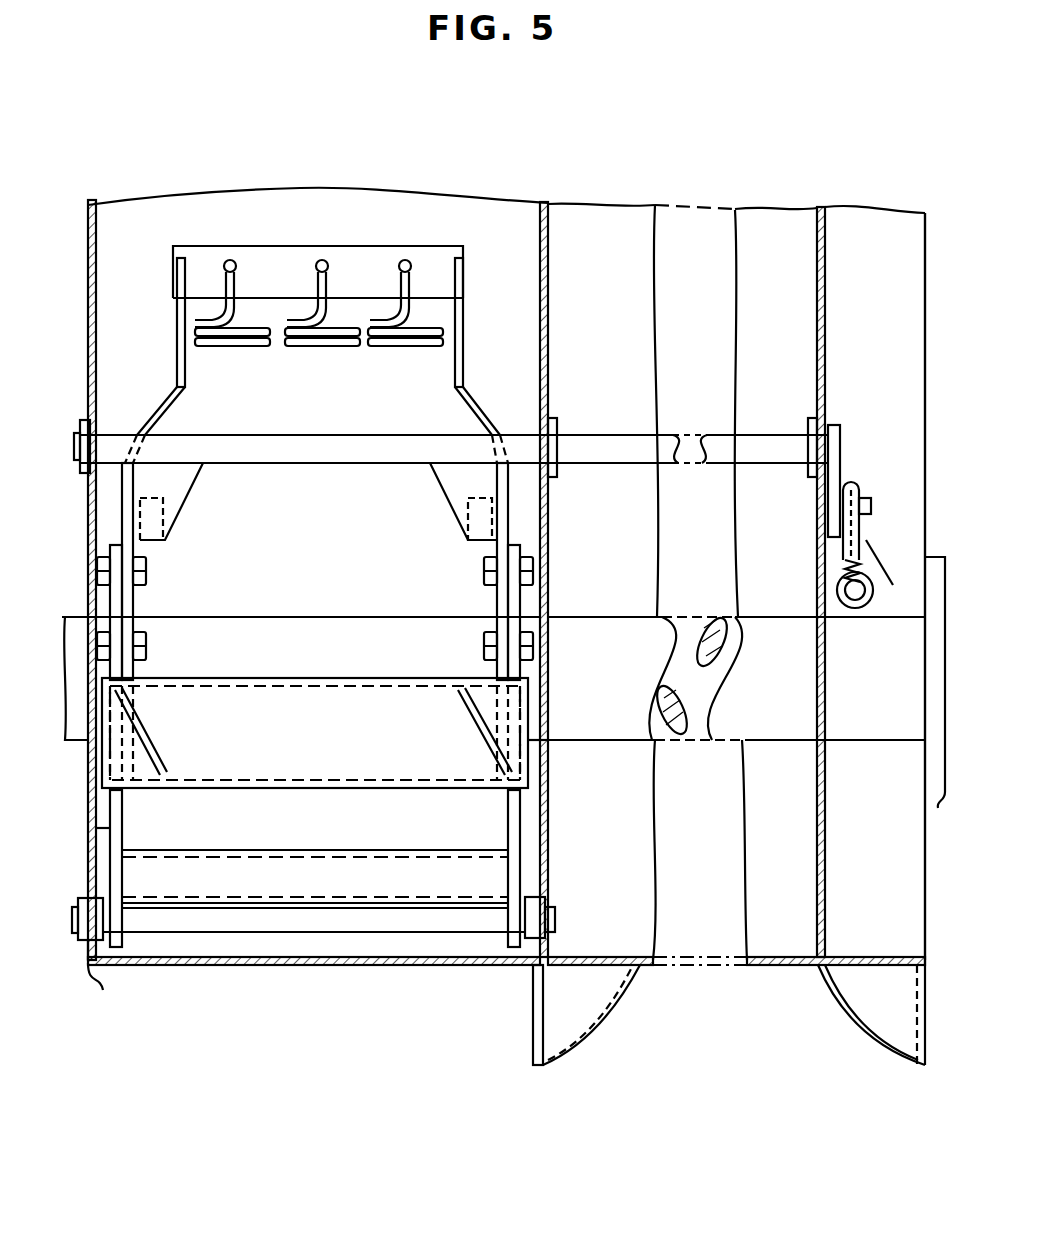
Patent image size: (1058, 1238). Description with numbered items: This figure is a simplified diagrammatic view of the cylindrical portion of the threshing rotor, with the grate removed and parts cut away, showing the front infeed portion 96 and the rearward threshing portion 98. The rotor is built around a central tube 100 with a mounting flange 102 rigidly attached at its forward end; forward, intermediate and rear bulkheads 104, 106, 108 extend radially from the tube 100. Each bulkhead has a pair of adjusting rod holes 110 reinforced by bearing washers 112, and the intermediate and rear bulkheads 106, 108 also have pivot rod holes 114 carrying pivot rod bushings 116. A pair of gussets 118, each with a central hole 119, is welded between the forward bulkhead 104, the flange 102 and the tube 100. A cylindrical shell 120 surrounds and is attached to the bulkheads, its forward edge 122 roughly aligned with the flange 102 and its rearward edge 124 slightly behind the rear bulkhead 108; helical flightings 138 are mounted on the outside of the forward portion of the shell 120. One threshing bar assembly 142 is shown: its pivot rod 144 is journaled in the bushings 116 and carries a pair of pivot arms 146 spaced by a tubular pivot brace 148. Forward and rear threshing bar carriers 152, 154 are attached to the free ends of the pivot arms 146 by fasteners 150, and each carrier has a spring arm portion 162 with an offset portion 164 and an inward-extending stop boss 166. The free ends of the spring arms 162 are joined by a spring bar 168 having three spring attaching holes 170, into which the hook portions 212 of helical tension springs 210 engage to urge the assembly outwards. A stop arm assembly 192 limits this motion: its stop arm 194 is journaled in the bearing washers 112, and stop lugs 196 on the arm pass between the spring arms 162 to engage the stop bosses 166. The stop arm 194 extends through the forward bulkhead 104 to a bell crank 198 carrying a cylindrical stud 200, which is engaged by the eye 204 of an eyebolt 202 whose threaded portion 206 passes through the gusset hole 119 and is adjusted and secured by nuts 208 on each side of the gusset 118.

The front infeed portion 96 is at (768, 1010).
The rearward threshing portion 98 is at (298, 1020).
The central tube 100 is at (668, 745).
The mounting flange 102 is at (944, 827).
The forward bulkhead 104 is at (825, 850).
The intermediate bulkhead 106 is at (548, 785).
The rear bulkhead 108 is at (122, 828).
The adjusting rod hole 110 is at (88, 440).
The bearing washer 112 is at (78, 420).
The pivot rod hole 114 is at (95, 898).
The pivot rod bushing 116 is at (85, 945).
The gusset 118 is at (898, 572).
The central hole 119 is at (866, 610).
The cylindrical shell 120 is at (225, 965).
The forward edge 122 is at (941, 586).
The rearward edge 124 is at (109, 988).
The helical flighting 138 is at (598, 1012).
The threshing bar assembly 142 is at (325, 955).
The pivot rod 144 is at (402, 934).
The pivot arm 146 is at (122, 807).
The tubular pivot brace 148 is at (290, 850).
The fasteners 150 is at (146, 644).
The forward threshing bar carrier 152 is at (450, 418).
The rear threshing bar carrier 154 is at (200, 420).
The spring arm portion 162 is at (177, 357).
The offset portion 164 is at (165, 403).
The stop boss 166 is at (165, 518).
The spring bar 168 is at (298, 245).
The spring attaching hole 170 is at (230, 260).
The stop arm assembly 192 is at (850, 445).
The stop arm 194 is at (665, 445).
The stop lug 196 is at (203, 478).
The bell crank 198 is at (860, 478).
The cylindrical stud 200 is at (873, 505).
The eyebolt 202 is at (894, 576).
The eye 204 is at (858, 488).
The threaded portion 206 is at (846, 570).
The nuts 208 is at (837, 588).
The helical tension spring 210 is at (378, 333).
The hook portion 212 is at (232, 290).